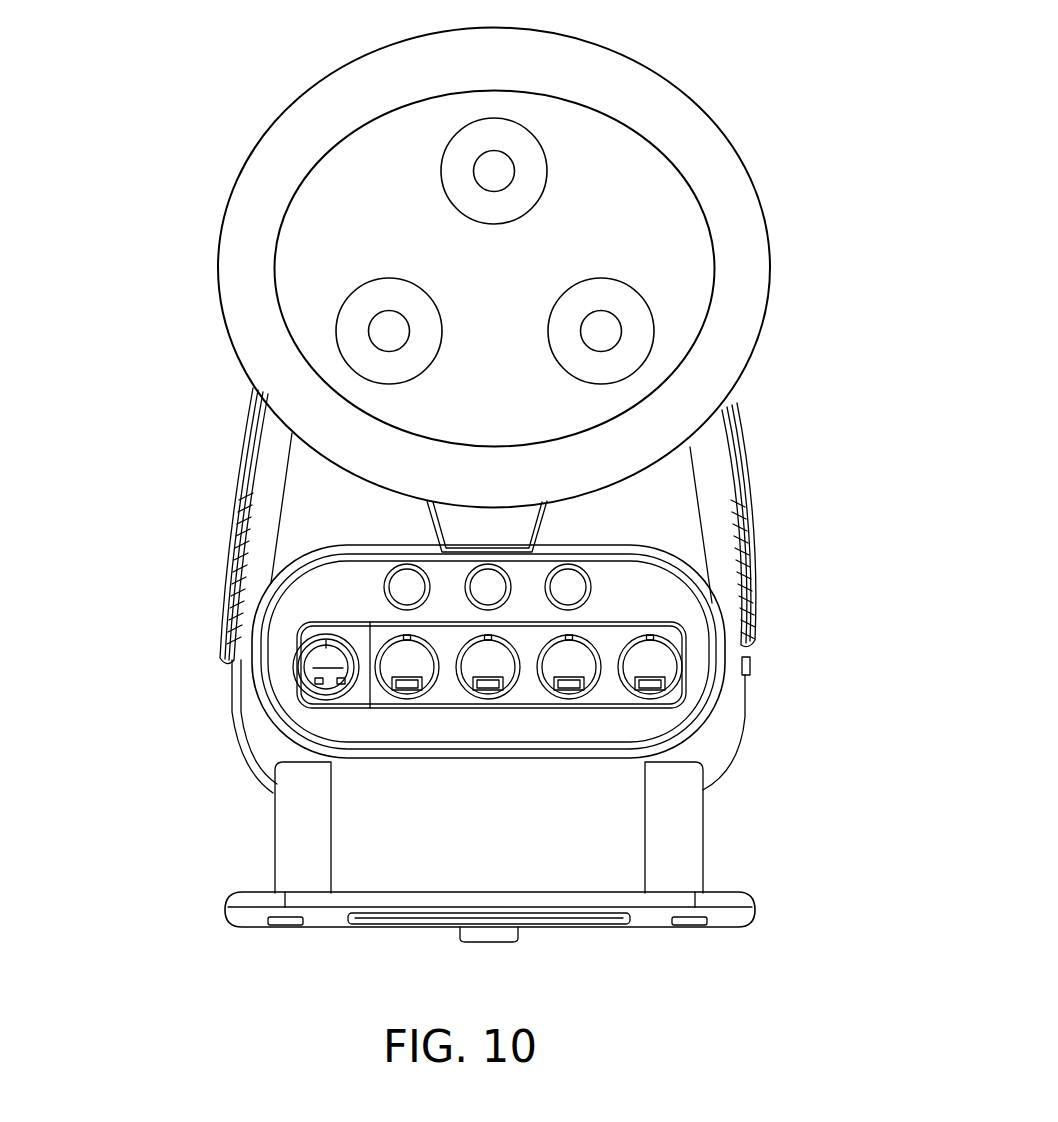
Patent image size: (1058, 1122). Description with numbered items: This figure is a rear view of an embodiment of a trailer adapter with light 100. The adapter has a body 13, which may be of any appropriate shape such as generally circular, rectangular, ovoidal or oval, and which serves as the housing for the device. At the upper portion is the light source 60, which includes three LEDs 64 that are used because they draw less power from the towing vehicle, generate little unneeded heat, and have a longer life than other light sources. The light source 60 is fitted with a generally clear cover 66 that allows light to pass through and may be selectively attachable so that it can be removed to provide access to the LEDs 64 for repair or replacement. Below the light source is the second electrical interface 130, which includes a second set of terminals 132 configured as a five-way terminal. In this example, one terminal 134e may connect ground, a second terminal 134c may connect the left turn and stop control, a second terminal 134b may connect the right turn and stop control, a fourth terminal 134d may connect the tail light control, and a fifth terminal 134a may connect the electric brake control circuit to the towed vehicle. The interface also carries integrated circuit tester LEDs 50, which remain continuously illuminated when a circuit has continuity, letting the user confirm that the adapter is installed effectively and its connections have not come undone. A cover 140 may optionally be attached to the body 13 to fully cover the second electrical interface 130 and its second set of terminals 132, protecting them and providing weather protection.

The trailer adapter with light 100 is at (740, 128).
The light source 60 is at (643, 62).
The cover 66 is at (748, 300).
The LEDs 64 is at (517, 144).
The body 13 is at (663, 485).
The second electrical interface 130 is at (629, 633).
The LED 50 is at (403, 588).
The second set of terminals 132 is at (307, 715).
The fifth terminal 134a is at (662, 678).
The second terminal 134b is at (565, 686).
The second terminal 134c is at (478, 670).
The fourth terminal 134d is at (400, 666).
The terminal 134e is at (315, 667).
The cover 140 is at (692, 841).